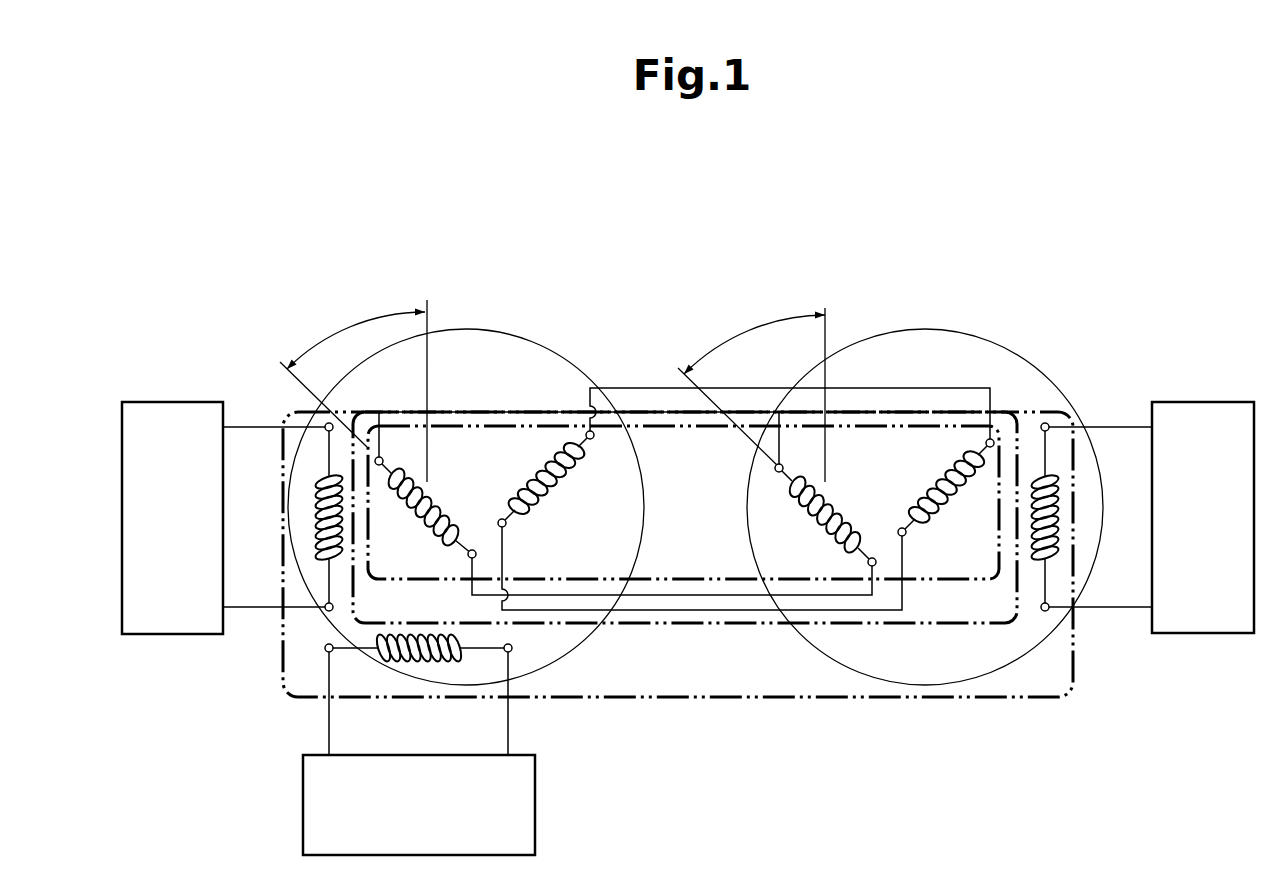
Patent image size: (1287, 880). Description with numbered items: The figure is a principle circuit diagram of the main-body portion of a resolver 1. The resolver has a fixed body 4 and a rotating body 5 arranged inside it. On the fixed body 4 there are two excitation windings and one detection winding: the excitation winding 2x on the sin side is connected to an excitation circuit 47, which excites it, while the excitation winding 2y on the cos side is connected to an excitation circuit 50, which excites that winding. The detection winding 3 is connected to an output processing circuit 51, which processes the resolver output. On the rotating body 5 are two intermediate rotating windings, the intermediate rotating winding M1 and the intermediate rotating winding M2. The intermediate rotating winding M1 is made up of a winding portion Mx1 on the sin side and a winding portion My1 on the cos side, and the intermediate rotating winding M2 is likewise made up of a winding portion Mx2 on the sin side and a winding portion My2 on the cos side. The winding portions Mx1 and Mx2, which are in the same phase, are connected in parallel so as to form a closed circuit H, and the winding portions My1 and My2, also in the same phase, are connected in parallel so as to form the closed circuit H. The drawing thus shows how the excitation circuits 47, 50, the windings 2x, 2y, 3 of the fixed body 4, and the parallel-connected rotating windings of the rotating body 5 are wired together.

The resolver 1 is at (800, 237).
The excitation winding 2x is at (313, 506).
The excitation winding 2y is at (420, 661).
The detection winding 3 is at (1063, 490).
The fixed body 4 is at (945, 700).
The rotating body 5 is at (750, 626).
The excitation circuit 47 is at (145, 402).
The excitation circuit 50 is at (535, 812).
The output processing circuit 51 is at (1215, 633).
The intermediate rotating winding M1 is at (490, 373).
The intermediate rotating winding M2 is at (908, 360).
The winding portion Mx1 is at (440, 500).
The winding portion My1 is at (558, 485).
The winding portion Mx2 is at (840, 510).
The winding portion My2 is at (935, 500).
The closed circuit H is at (641, 601).